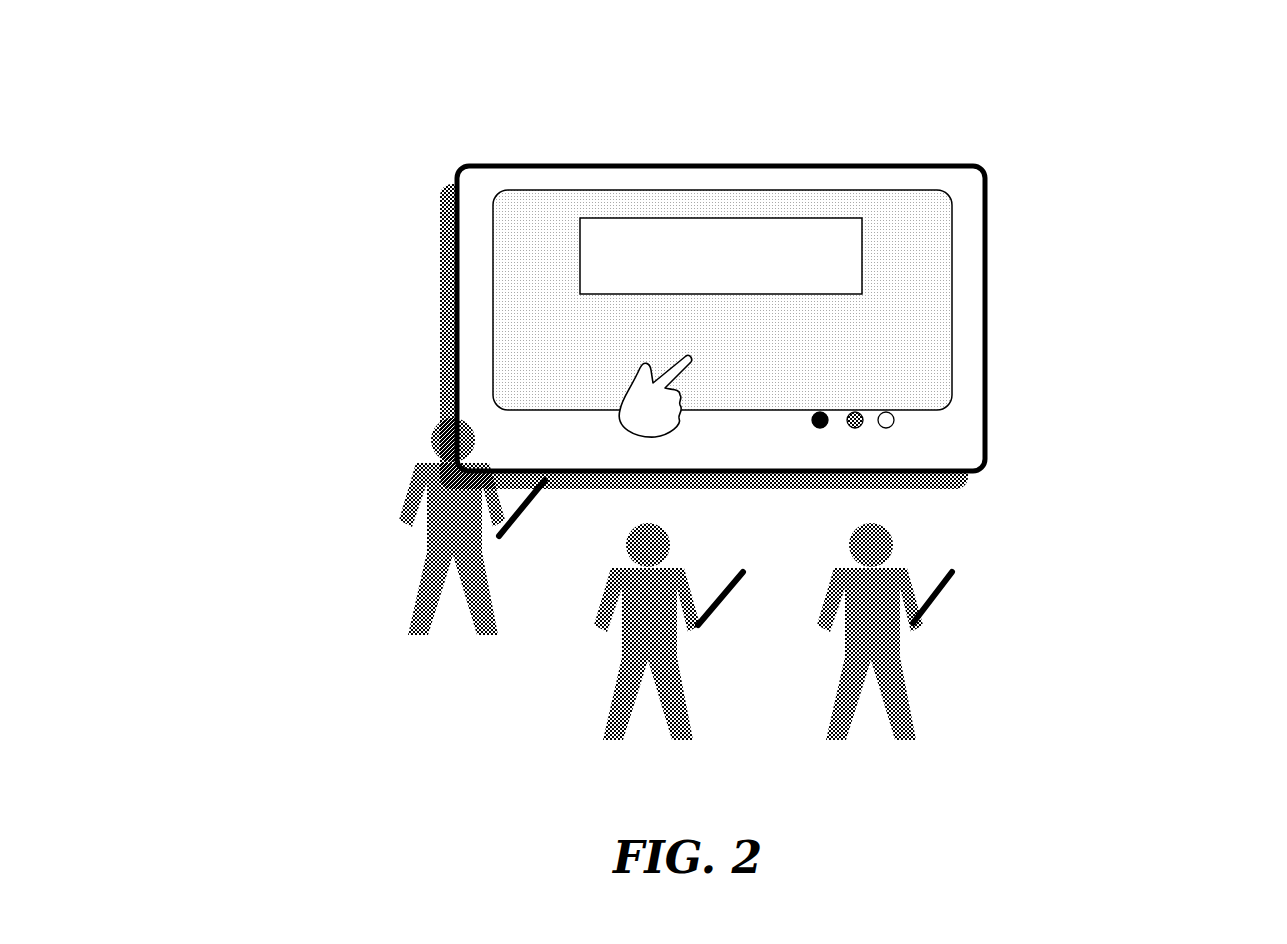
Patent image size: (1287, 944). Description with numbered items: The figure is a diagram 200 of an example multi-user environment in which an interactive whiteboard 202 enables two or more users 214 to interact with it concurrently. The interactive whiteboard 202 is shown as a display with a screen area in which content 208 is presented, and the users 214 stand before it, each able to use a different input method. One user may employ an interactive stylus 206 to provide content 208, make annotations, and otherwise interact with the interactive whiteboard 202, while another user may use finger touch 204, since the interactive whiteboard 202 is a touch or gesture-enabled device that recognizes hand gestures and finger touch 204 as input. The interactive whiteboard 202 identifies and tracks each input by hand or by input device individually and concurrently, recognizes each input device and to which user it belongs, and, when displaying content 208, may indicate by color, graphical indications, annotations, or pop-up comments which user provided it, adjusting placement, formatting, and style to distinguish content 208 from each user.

The diagram 200 is at (1193, 88).
The interactive whiteboard 202 is at (712, 295).
The finger touch 204 is at (660, 345).
The interactive stylus 206 is at (948, 570).
The content 208 is at (836, 262).
The users 214 is at (402, 642).